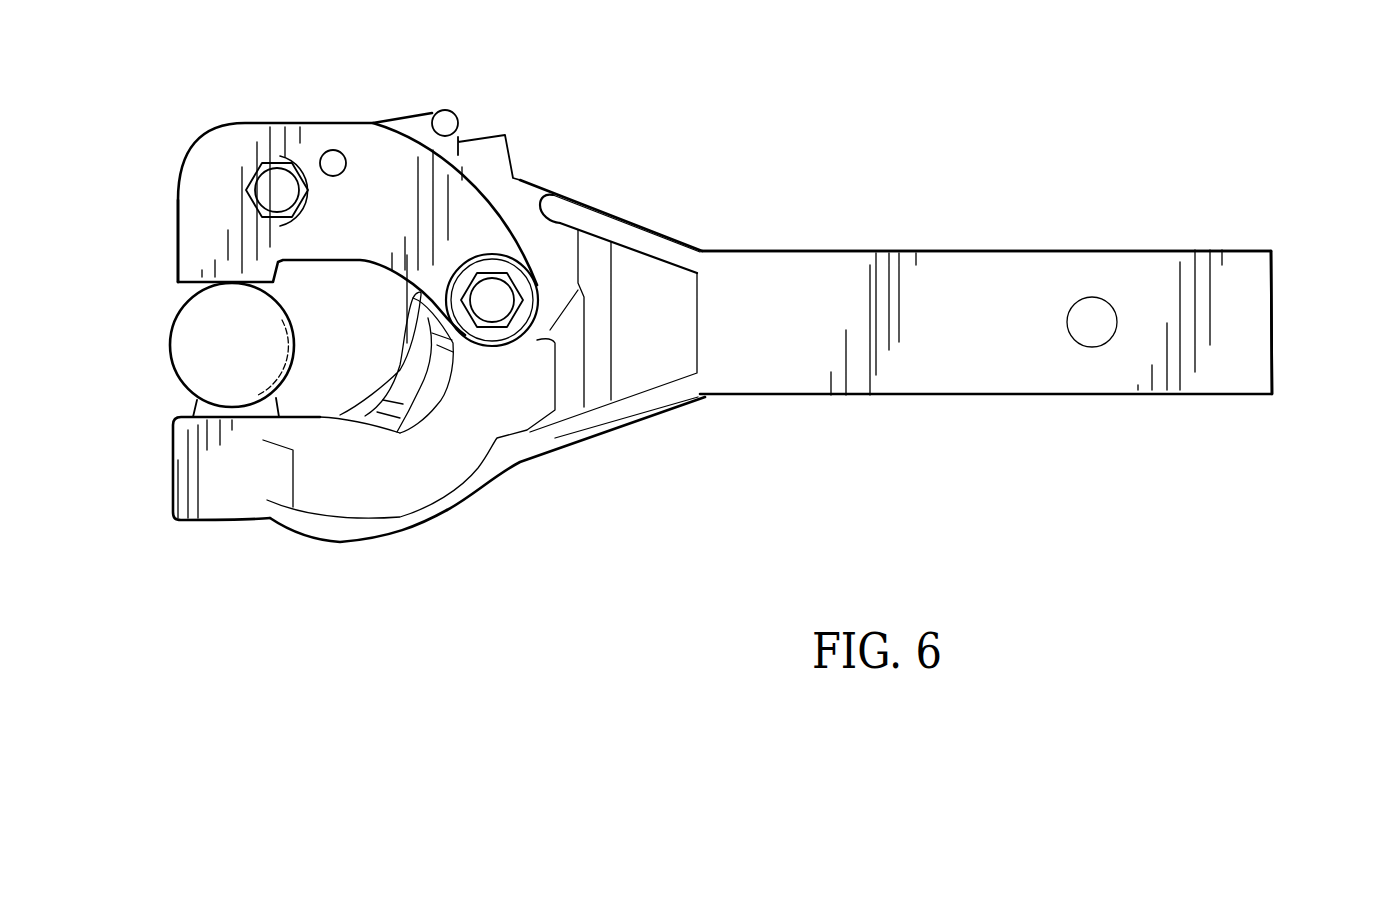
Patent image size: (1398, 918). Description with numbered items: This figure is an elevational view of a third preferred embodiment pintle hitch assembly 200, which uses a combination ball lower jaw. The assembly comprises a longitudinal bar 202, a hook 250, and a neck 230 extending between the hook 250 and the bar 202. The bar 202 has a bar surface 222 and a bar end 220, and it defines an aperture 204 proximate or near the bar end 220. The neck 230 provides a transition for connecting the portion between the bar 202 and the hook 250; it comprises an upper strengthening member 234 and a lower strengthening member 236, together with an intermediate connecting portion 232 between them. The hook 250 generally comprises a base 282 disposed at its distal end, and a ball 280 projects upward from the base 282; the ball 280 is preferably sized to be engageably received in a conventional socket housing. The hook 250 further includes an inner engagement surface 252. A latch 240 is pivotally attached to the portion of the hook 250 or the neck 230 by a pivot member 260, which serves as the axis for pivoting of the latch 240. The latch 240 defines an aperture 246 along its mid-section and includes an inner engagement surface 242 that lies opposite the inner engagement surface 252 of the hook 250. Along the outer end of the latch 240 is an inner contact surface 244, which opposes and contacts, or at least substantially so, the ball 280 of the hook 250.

The pintle hitch assembly 200 is at (1198, 128).
The longitudinal bar 202 is at (1010, 375).
The aperture 204 is at (1081, 319).
The bar end 220 is at (1273, 318).
The bar surface 222 is at (808, 263).
The neck 230 is at (603, 218).
The intermediate connecting portion 232 is at (650, 360).
The upper strengthening member 234 is at (668, 243).
The lower strengthening member 236 is at (703, 393).
The latch 240 is at (268, 128).
The inner engagement surface 242 is at (345, 262).
The inner contact surface 244 is at (177, 282).
The aperture 246 is at (334, 150).
The hook 250 is at (360, 502).
The inner engagement surface 252 is at (330, 413).
The pivot member 260 is at (497, 285).
The ball 280 is at (183, 330).
The base 282 is at (185, 477).